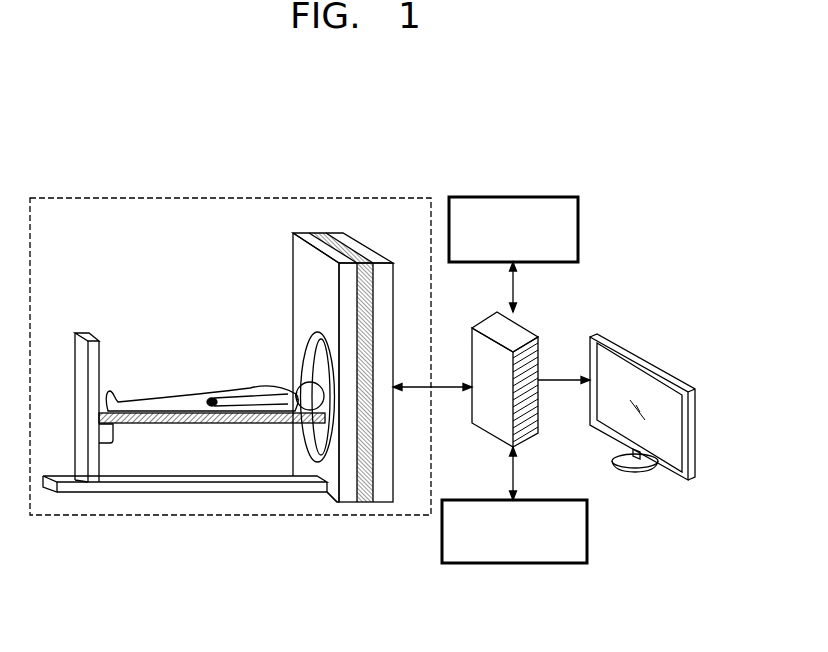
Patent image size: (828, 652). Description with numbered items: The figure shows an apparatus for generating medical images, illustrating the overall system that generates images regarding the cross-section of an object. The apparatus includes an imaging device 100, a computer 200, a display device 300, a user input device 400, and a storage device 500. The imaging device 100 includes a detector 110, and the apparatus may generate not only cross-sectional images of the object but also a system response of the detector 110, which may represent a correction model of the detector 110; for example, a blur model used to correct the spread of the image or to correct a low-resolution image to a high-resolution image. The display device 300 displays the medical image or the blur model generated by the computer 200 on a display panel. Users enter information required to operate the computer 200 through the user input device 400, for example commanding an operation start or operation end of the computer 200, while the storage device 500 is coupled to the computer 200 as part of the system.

The imaging device 100 is at (218, 199).
The detector 110 is at (335, 233).
The computer 200 is at (530, 330).
The display device 300 is at (645, 363).
The user input device 400 is at (530, 499).
The storage device 500 is at (533, 197).